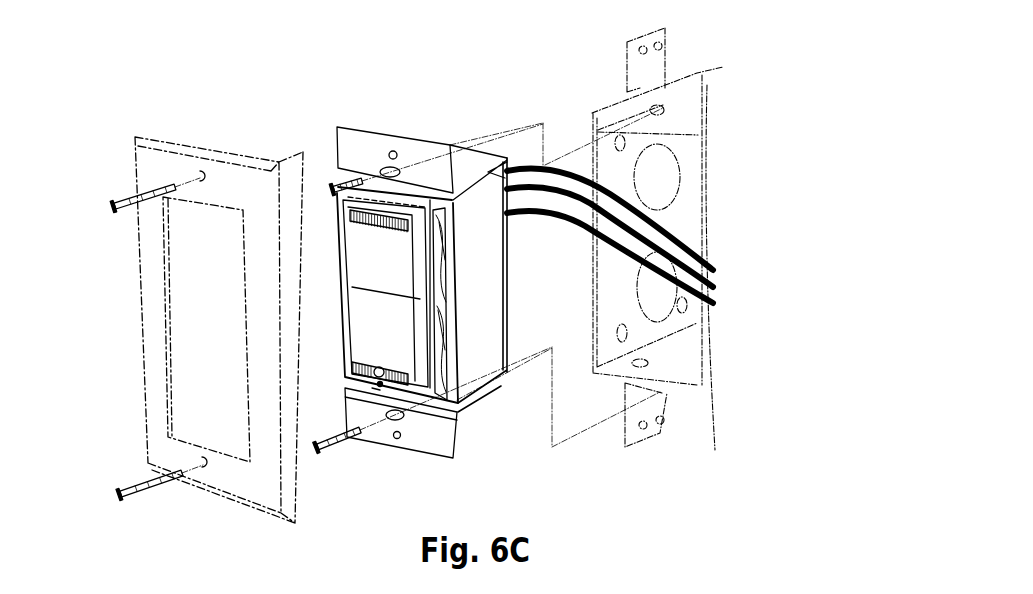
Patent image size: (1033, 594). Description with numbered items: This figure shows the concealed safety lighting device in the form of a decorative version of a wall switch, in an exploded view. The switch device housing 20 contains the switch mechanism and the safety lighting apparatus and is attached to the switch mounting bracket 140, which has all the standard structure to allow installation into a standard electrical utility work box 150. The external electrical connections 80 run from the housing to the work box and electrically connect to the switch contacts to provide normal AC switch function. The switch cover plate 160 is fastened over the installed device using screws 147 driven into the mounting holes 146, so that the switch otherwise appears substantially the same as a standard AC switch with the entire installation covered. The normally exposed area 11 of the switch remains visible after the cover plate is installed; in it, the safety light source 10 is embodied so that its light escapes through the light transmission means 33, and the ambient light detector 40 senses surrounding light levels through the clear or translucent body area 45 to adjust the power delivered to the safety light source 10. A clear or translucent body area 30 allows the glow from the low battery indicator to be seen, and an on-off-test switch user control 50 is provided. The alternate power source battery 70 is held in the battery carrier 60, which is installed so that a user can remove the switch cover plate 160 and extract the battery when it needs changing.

The switch cover plate 160 is at (168, 173).
The screw 147 is at (128, 200).
The mounting holes 146 is at (395, 168).
The switch mounting bracket 140 is at (430, 428).
The clear or translucent body area 30 is at (457, 200).
The switch device housing 20 is at (480, 368).
The normally exposed area of a switch 11 is at (334, 330).
The safety light source 10 is at (377, 223).
The light transmission means 33 is at (362, 221).
The clear or translucent body area 45 is at (374, 372).
The ambient light detector 40 is at (378, 385).
The on-off-test switch user control 50 is at (376, 389).
The battery carrier 60 is at (458, 395).
The alternate power source battery 70 is at (458, 357).
The external electrical connections 80 is at (580, 233).
The electrical utility work box 150 is at (700, 72).